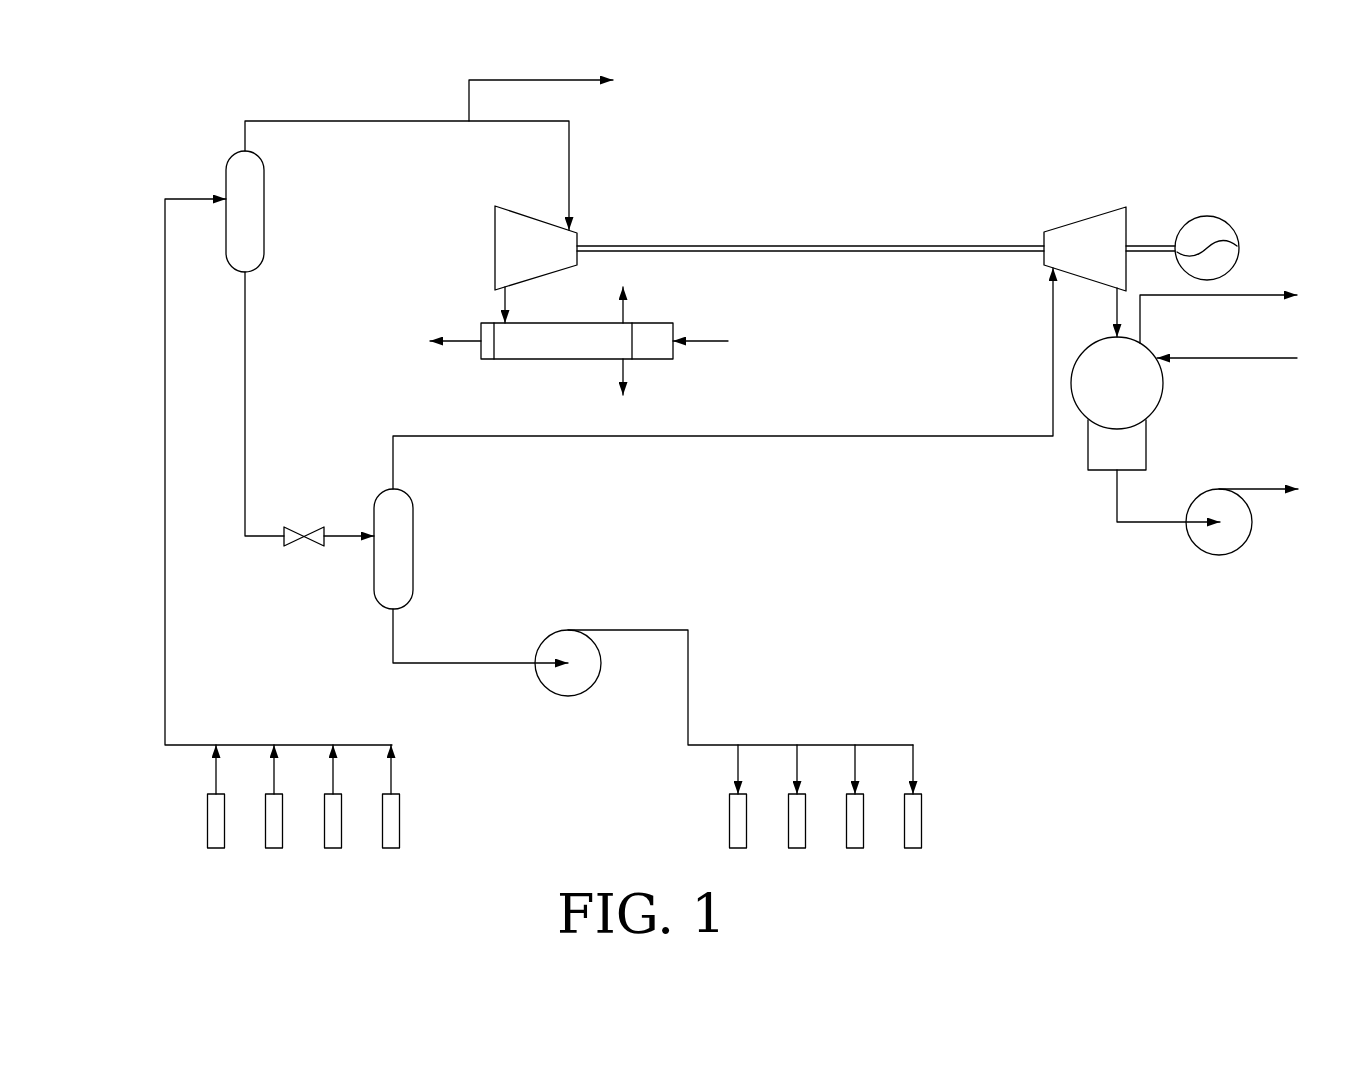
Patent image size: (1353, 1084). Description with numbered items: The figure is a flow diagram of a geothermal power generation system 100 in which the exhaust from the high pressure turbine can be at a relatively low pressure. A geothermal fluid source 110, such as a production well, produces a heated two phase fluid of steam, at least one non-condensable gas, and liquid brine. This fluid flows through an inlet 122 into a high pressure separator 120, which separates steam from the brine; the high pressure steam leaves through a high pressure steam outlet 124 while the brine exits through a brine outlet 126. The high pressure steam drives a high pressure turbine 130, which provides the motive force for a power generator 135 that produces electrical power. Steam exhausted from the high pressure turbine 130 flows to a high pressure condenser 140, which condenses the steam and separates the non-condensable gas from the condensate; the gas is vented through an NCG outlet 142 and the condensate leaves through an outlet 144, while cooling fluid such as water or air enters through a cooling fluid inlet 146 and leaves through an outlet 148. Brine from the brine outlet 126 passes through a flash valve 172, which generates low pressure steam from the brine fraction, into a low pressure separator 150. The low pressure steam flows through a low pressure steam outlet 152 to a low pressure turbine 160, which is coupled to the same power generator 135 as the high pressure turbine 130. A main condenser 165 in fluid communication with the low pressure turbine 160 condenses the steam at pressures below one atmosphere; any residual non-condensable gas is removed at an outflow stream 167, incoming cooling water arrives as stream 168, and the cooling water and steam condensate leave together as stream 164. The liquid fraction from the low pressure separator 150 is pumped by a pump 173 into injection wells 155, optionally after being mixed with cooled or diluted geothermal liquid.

The geothermal power generation system 100 is at (1160, 118).
The geothermal fluid source 110 is at (197, 823).
The high pressure separator 120 is at (255, 168).
The inlet 122 is at (224, 197).
The high pressure steam outlet 124 is at (243, 151).
The brine outlet 126 is at (246, 273).
The high pressure turbine 130 is at (514, 219).
The power generator 135 is at (1202, 223).
The high pressure condenser 140 is at (548, 355).
The NCG outlet 142 is at (627, 323).
The outlet 144 is at (627, 360).
The cooling fluid inlet 146 is at (707, 340).
The cooling fluid outlet 148 is at (465, 340).
The low pressure separator 150 is at (405, 505).
The low pressure steam outlet 152 is at (392, 489).
The injection wells 155 is at (717, 823).
The low pressure turbine 160 is at (1090, 227).
The outflow stream of cooling water and steam condensate 164 is at (1115, 498).
The main condenser 165 is at (1153, 395).
The outflow stream 167 is at (1258, 295).
The incoming cooling water stream 168 is at (1225, 358).
The flash valve 172 is at (295, 542).
The pump 173 is at (1223, 543).